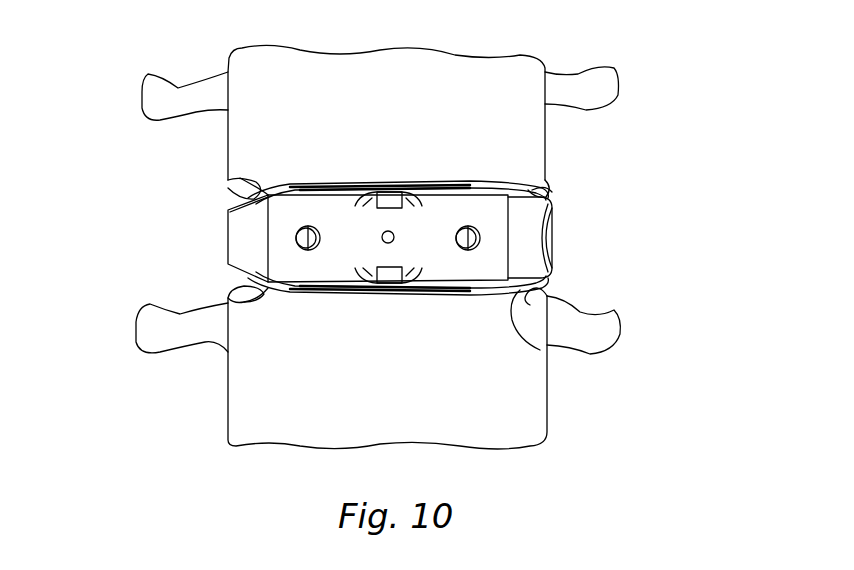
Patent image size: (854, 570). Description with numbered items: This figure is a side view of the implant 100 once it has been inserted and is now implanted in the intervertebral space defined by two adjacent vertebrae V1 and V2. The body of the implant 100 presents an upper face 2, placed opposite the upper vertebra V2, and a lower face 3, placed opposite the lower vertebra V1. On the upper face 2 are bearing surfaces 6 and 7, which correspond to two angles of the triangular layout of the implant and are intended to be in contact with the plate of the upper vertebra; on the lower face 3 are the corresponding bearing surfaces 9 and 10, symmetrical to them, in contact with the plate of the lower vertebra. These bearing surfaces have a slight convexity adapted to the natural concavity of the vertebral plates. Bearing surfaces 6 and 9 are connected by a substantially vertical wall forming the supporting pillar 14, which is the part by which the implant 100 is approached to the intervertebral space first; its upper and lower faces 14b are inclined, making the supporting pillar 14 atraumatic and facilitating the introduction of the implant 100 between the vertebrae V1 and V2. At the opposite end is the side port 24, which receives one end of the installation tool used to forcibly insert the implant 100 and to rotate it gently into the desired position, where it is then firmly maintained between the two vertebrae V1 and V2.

The upper face 2 is at (466, 184).
The lower face 3 is at (446, 287).
The bearing surface 6 is at (268, 186).
The bearing surface 7 is at (540, 187).
The bearing surface 9 is at (226, 294).
The bearing surface 10 is at (520, 292).
The supporting pillar 14 is at (224, 237).
The inclined upper and lower faces of the supporting pillar 14b is at (258, 203).
The side port 24 is at (542, 239).
The implant 100 is at (577, 262).
The vertebra V1 is at (187, 402).
The vertebra V2 is at (178, 139).